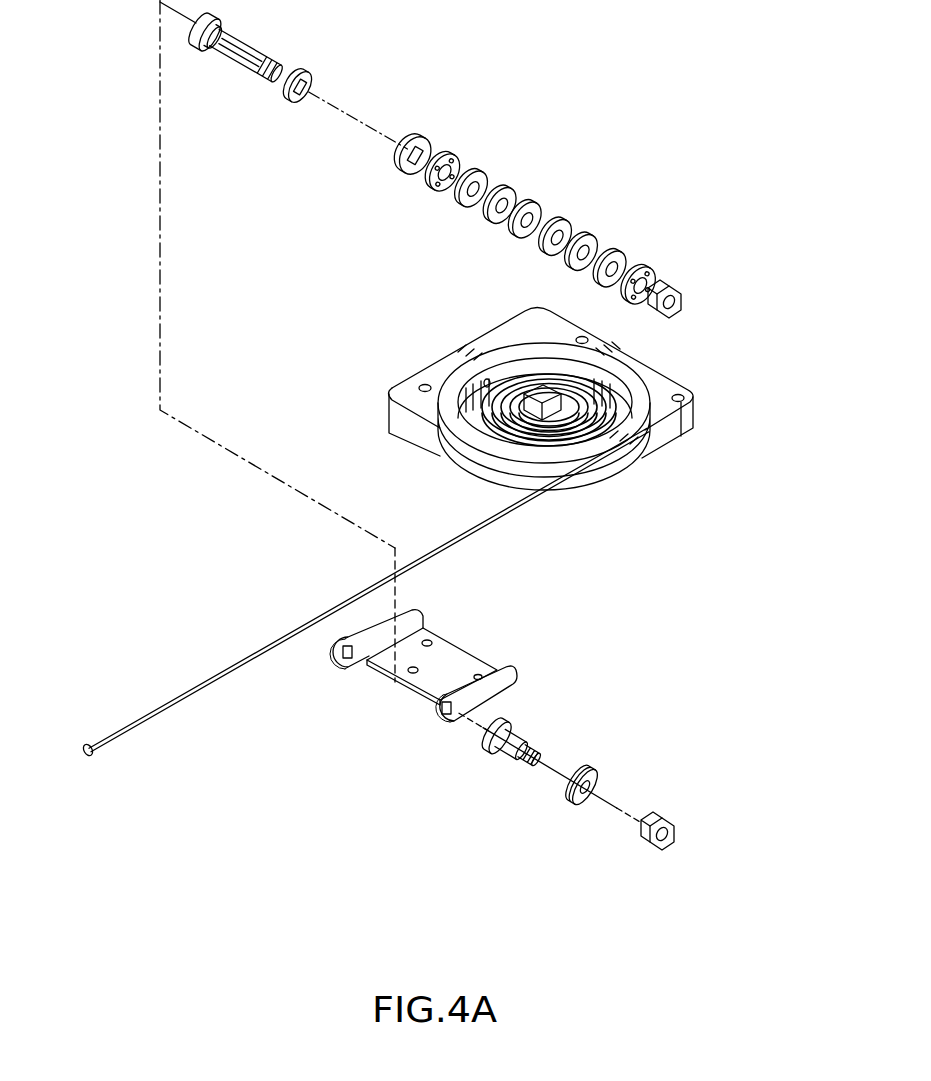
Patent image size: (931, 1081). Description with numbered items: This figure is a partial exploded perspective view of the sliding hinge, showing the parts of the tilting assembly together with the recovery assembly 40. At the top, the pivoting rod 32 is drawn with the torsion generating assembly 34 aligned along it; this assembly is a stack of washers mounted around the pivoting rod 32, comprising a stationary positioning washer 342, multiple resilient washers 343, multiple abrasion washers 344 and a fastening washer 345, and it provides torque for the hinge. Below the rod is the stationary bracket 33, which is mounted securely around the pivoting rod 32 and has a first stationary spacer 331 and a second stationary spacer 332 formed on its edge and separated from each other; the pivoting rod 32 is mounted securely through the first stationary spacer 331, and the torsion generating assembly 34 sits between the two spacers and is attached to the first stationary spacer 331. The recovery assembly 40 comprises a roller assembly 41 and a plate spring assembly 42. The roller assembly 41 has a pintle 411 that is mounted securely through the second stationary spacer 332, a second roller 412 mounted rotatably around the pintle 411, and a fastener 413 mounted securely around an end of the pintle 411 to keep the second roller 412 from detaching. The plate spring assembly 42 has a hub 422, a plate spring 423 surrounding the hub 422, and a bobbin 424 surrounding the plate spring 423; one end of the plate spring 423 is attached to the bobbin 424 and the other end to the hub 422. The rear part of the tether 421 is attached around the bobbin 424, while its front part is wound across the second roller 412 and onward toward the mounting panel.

The pivoting rod 32 is at (290, 44).
The torsion generating assembly 34 is at (563, 212).
The stationary positioning washer 342 is at (423, 142).
The resilient washers 343 is at (571, 222).
The abrasion washers 344 is at (646, 270).
The fastening washer 345 is at (684, 293).
The recovery assembly 40 is at (692, 366).
The plate spring assembly 42 is at (376, 529).
The tether 421 is at (100, 748).
The hub 422 is at (532, 394).
The plate spring 423 is at (432, 362).
The bobbin 424 is at (457, 420).
The stationary bracket 33 is at (402, 683).
The first stationary spacer 331 is at (345, 666).
The second stationary spacer 332 is at (436, 724).
The roller assembly 41 is at (563, 789).
The pintle 411 is at (490, 756).
The second roller 412 is at (577, 808).
The fastener 413 is at (648, 840).